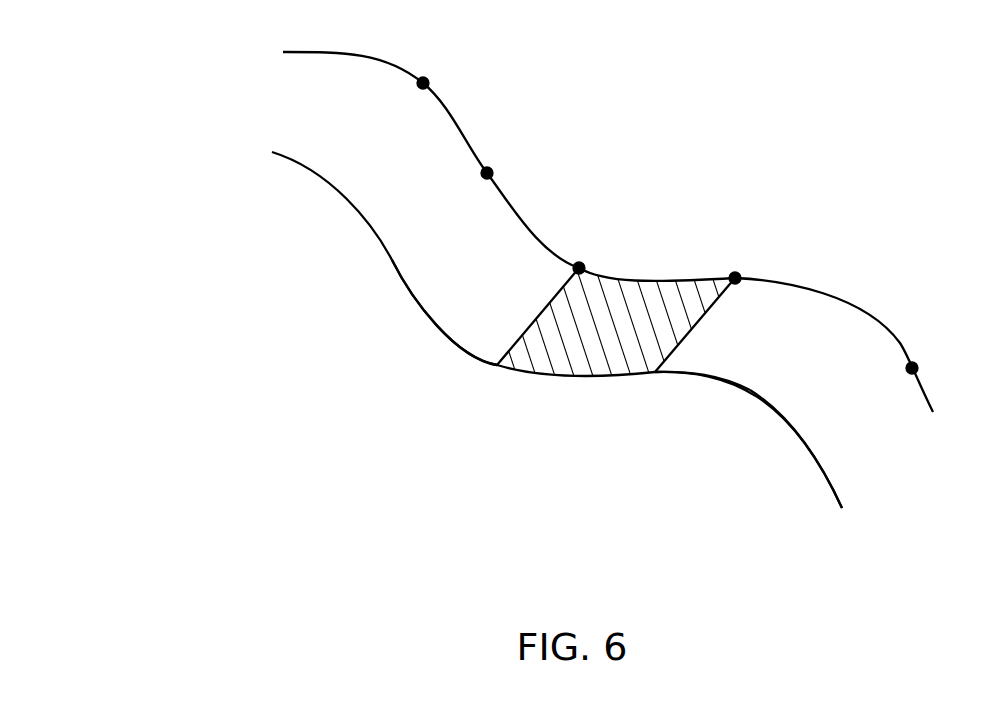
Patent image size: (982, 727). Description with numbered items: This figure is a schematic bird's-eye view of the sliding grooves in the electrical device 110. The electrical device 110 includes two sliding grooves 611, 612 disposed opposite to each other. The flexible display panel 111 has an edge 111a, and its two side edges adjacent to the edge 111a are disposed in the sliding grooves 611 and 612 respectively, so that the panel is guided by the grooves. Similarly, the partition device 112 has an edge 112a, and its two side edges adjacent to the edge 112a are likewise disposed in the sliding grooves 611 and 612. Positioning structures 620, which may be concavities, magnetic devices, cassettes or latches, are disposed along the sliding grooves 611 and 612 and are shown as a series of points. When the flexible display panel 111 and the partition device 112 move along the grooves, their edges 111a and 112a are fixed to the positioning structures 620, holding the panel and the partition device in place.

The electrical device 110 is at (783, 498).
The flexible display panel 111 is at (463, 332).
The edge of the flexible display panel 111a is at (542, 312).
The partition device 112 is at (577, 358).
The edge of the partition device 112a is at (703, 317).
The sliding groove 611 is at (692, 377).
The sliding groove 612 is at (822, 292).
The positioning structures 620 is at (895, 335).